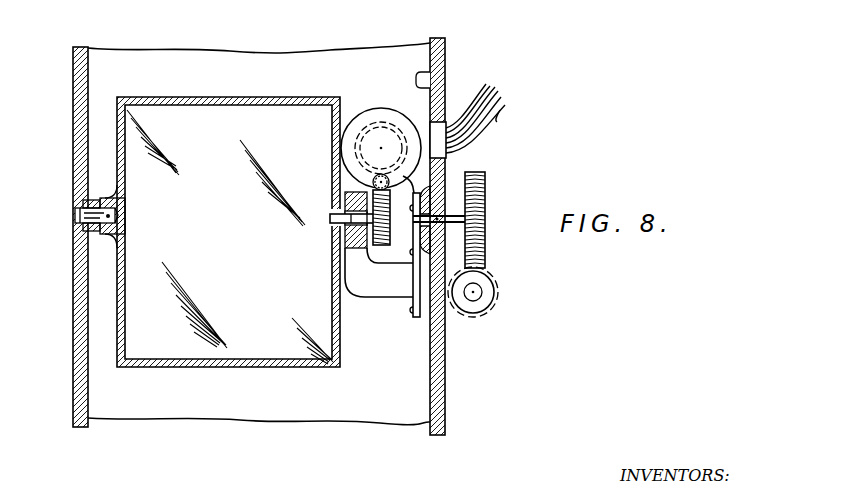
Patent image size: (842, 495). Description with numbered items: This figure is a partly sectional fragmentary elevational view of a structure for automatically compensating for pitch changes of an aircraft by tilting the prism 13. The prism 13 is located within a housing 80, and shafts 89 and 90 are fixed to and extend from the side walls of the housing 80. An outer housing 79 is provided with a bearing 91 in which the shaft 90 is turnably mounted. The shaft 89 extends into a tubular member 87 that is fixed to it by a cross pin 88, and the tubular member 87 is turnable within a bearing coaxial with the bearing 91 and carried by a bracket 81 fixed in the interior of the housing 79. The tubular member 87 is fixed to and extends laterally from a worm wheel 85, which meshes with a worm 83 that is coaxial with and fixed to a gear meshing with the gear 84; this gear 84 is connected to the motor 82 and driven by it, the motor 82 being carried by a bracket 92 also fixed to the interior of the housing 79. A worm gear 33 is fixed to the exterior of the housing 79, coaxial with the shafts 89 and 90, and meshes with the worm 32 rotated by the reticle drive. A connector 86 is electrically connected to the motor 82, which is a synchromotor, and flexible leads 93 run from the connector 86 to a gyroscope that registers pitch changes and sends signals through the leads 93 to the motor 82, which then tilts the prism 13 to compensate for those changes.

The prism 13 is at (174, 110).
The worm 32 is at (484, 292).
The worm gear 33 is at (486, 200).
The housing 79 is at (80, 418).
The housing 80 is at (330, 370).
The bracket 81 is at (367, 291).
The motor 82 is at (394, 128).
The worm 83 is at (368, 142).
The gear 84 is at (372, 180).
The worm wheel 85 is at (407, 257).
The connector 86 is at (452, 118).
The tubular member 87 is at (345, 196).
The cross pin 88 is at (333, 211).
The shaft 89 is at (345, 233).
The shaft 90 is at (76, 217).
The bearing 91 is at (74, 203).
The bracket 92 is at (423, 73).
The flexible leads 93 is at (497, 121).